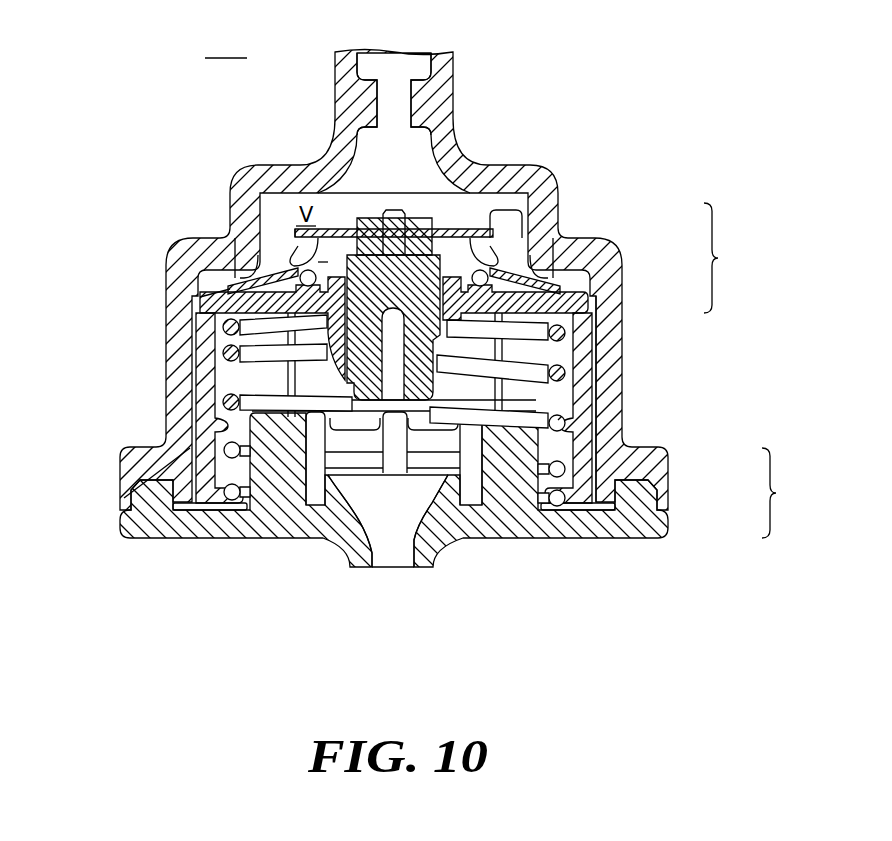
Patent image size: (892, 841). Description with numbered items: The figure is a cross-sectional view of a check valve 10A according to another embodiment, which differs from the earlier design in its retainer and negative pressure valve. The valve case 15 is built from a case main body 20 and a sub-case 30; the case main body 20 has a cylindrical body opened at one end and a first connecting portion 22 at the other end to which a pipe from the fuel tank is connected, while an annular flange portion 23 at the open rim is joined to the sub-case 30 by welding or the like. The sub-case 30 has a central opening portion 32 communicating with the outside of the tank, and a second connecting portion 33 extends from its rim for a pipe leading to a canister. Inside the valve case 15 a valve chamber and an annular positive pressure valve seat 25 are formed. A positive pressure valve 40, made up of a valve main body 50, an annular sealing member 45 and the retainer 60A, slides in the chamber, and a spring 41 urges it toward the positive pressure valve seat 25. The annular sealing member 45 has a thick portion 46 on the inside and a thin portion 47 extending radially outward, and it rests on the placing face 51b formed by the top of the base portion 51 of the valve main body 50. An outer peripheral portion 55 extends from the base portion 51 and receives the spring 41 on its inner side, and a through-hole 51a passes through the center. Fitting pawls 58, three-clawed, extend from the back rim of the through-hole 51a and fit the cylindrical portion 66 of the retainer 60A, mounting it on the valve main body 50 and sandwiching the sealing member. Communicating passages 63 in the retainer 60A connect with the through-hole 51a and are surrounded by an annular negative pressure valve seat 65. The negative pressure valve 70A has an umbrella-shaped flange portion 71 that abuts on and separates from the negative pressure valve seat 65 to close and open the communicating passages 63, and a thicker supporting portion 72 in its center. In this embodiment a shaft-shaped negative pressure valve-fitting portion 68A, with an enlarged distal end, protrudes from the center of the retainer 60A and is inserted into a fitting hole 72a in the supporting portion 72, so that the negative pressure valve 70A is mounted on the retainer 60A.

The check valve 10A is at (252, 152).
The valve case 15 is at (782, 493).
The case main body 20 is at (670, 468).
The first connecting portion 22 is at (440, 82).
The annular flange portion 23 is at (130, 476).
The positive pressure valve seat 25 is at (247, 275).
The sub-case 30 is at (670, 527).
The opening portion 32 is at (390, 523).
The second connecting portion 33 is at (428, 565).
The positive pressure valve 40 is at (725, 258).
The spring 41 is at (558, 505).
The annular sealing member 45 is at (569, 285).
The thick portion 46 is at (589, 271).
The thin portion 47 is at (248, 275).
The valve main body 50 is at (627, 413).
The base portion 51 is at (213, 310).
The through-hole 51a is at (447, 300).
The placing face 51b is at (228, 299).
The outer peripheral portion 55 is at (207, 408).
The fitting pawls 58 is at (345, 378).
The retainer 60A is at (556, 262).
The communicating passages 63 is at (323, 262).
The negative pressure valve seat 65 is at (508, 249).
The cylindrical portion 66 is at (372, 393).
The negative pressure valve-fitting portion 68A is at (393, 214).
The negative pressure valve 70A is at (468, 216).
The flange portion 71 is at (497, 212).
The supporting portion 72 is at (358, 228).
The fitting hole 72a is at (366, 216).